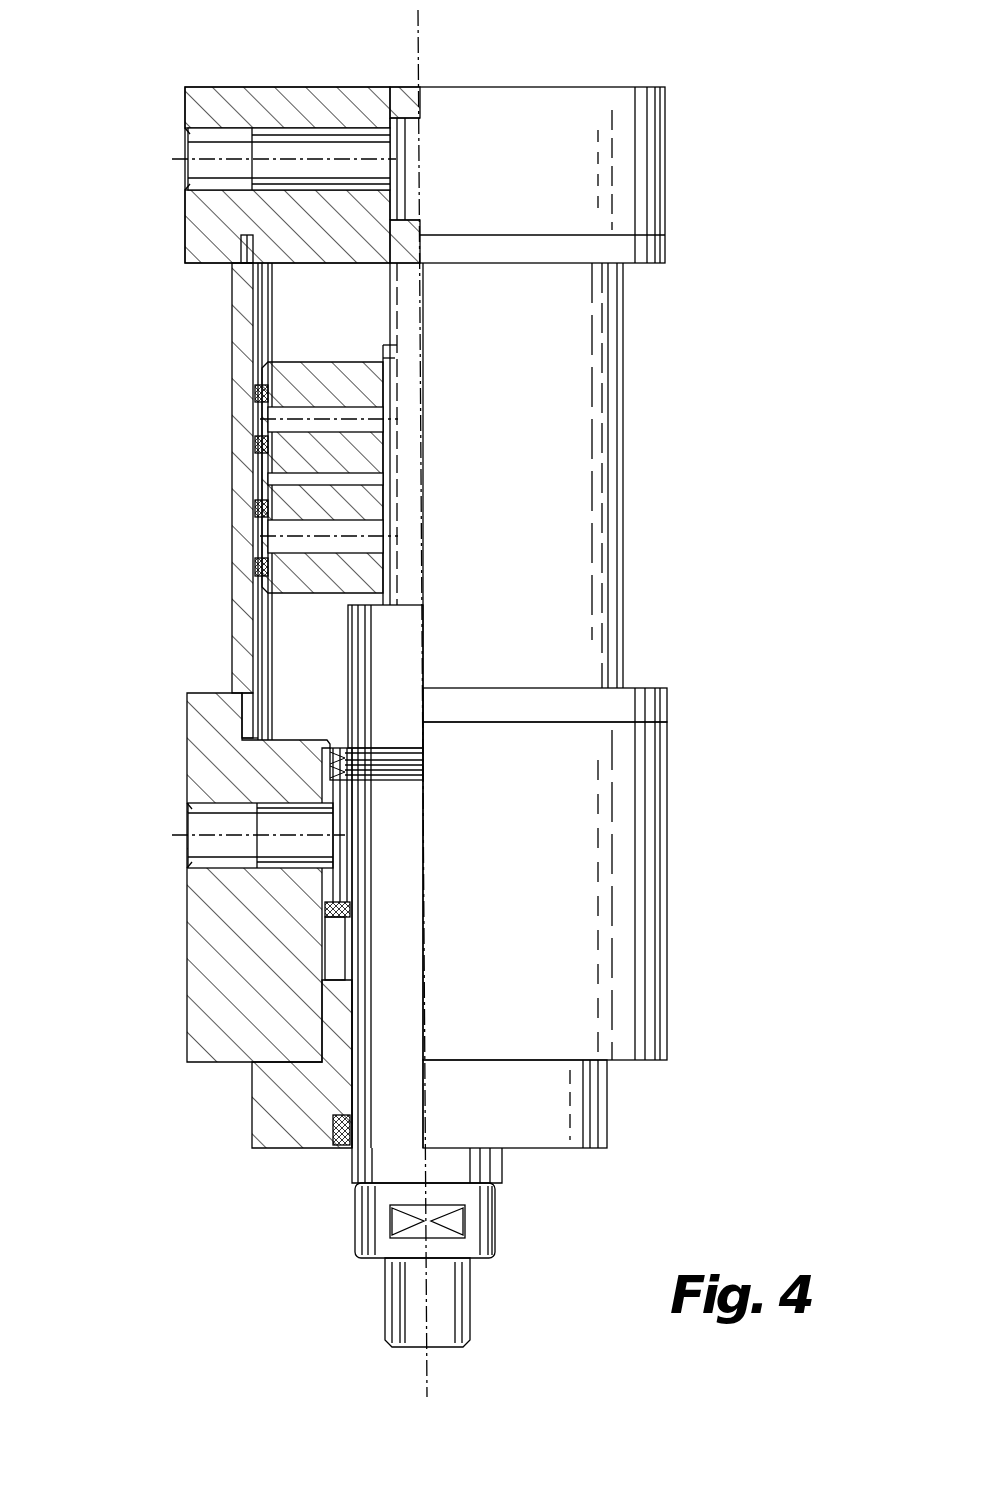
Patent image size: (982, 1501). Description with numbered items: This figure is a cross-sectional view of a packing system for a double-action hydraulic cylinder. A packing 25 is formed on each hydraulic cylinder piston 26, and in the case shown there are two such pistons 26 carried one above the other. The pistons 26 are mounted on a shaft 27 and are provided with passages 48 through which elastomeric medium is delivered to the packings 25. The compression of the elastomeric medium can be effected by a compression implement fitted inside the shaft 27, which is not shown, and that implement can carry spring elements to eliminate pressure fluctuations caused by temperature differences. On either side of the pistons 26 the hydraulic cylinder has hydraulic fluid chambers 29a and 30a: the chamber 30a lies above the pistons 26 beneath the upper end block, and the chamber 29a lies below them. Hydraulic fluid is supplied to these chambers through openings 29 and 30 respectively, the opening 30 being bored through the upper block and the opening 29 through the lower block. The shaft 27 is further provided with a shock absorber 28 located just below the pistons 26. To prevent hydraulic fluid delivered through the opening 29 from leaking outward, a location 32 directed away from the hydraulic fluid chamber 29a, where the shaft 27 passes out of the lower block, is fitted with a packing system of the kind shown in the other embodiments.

The packing 25 is at (265, 442).
The hydraulic cylinder piston 26 is at (312, 392).
The shaft 27 is at (378, 648).
The shock absorber 28 is at (385, 785).
The opening 29 is at (172, 826).
The hydraulic fluid chamber 29a is at (338, 705).
The opening 30 is at (172, 141).
The hydraulic fluid chamber 30a is at (366, 327).
The location 32 is at (368, 958).
The passages 48 is at (370, 408).